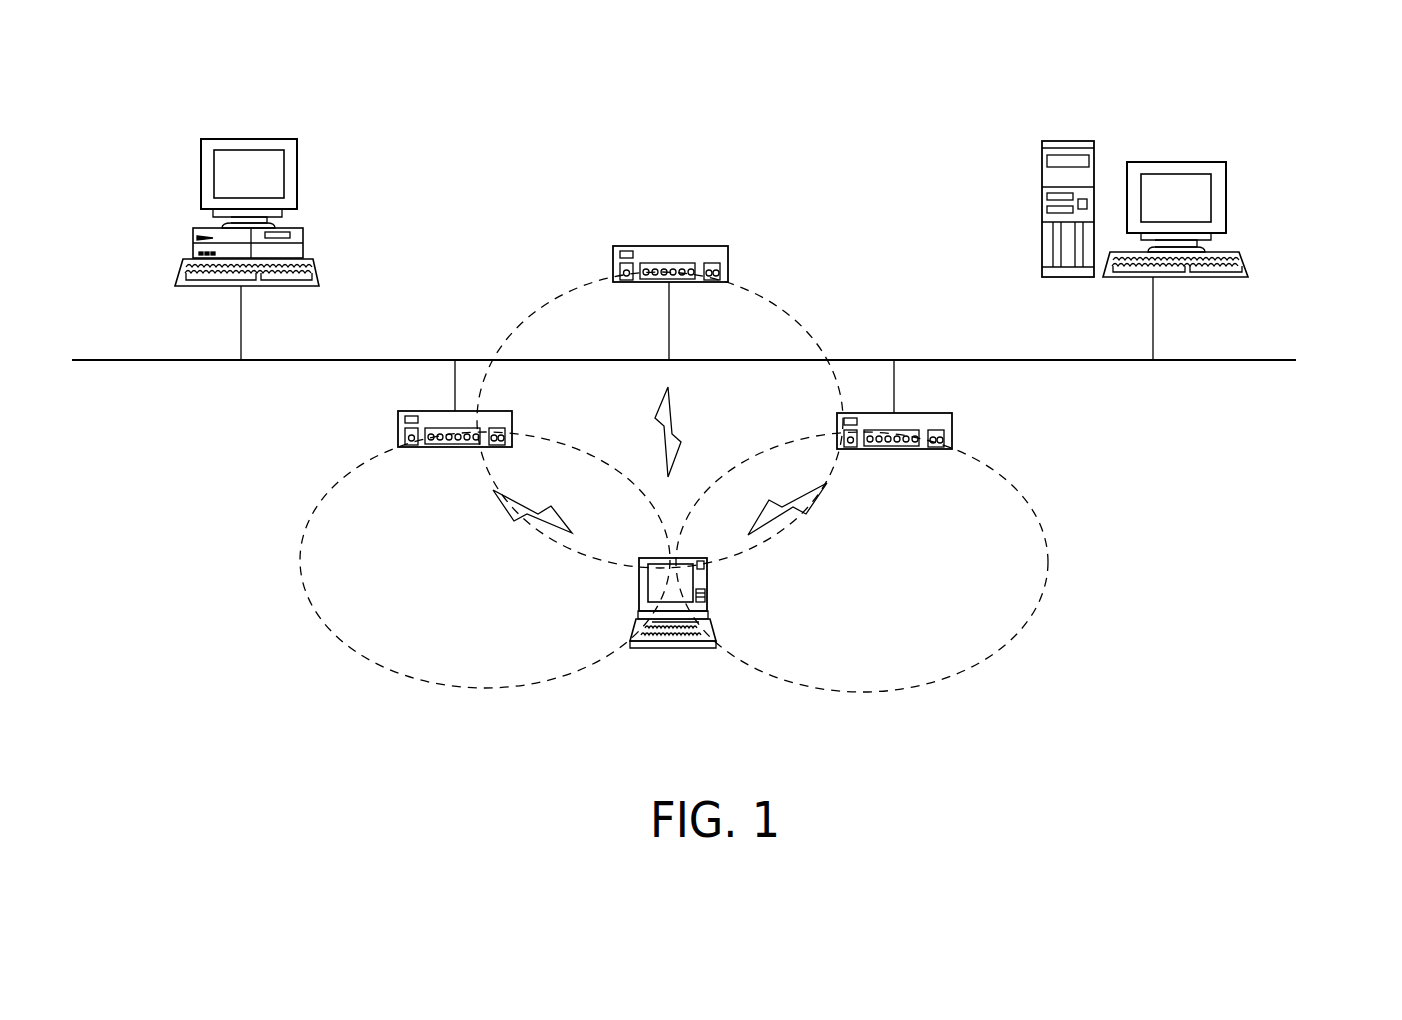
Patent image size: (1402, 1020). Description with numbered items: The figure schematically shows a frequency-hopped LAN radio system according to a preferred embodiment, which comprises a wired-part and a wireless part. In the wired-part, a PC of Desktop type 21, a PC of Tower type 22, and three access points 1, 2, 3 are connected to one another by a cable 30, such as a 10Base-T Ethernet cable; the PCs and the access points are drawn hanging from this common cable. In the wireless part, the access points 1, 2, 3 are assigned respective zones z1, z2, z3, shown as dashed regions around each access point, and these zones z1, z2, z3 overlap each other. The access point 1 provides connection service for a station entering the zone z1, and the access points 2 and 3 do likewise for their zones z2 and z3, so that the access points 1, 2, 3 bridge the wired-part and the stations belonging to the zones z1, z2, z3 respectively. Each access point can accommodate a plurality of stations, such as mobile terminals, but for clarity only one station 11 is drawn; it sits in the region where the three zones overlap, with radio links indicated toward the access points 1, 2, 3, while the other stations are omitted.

The access point 1 is at (408, 411).
The access point 2 is at (673, 246).
The access point 3 is at (932, 413).
The station 11 is at (666, 648).
The PC of Desktop type 21 is at (255, 139).
The PC of Tower type 22 is at (1168, 162).
The cable 30 is at (1236, 360).
The zone z1 is at (307, 532).
The zone z2 is at (798, 316).
The zone z3 is at (1047, 531).